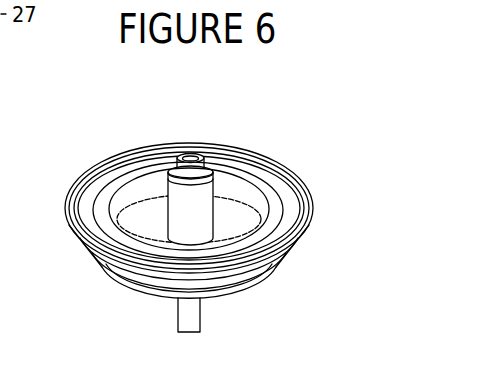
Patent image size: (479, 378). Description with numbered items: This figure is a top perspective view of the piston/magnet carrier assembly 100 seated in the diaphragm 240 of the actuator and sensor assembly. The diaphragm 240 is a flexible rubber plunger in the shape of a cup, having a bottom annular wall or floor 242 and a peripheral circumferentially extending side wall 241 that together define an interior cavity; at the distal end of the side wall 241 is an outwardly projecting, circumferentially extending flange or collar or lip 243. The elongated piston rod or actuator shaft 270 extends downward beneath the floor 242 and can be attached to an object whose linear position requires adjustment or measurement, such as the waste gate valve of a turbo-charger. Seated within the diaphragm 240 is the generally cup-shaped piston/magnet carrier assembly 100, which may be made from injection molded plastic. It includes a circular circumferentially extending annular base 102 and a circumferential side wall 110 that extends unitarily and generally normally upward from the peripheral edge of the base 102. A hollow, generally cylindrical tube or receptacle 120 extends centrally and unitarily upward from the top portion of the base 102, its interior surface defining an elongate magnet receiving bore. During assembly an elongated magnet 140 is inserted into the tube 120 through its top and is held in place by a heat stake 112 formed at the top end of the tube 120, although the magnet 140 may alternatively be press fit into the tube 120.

The piston/magnet carrier assembly 100 is at (157, 143).
The annular base 102 is at (130, 228).
The circumferential side wall 110 is at (177, 190).
The heat stake 112 is at (181, 156).
The hollow tube 120 is at (118, 196).
The elongated magnet 140 is at (193, 155).
The diaphragm 240 is at (247, 145).
The side wall 241 is at (235, 283).
The floor 242 is at (223, 297).
The lip 243 is at (298, 186).
The actuator shaft 270 is at (172, 320).